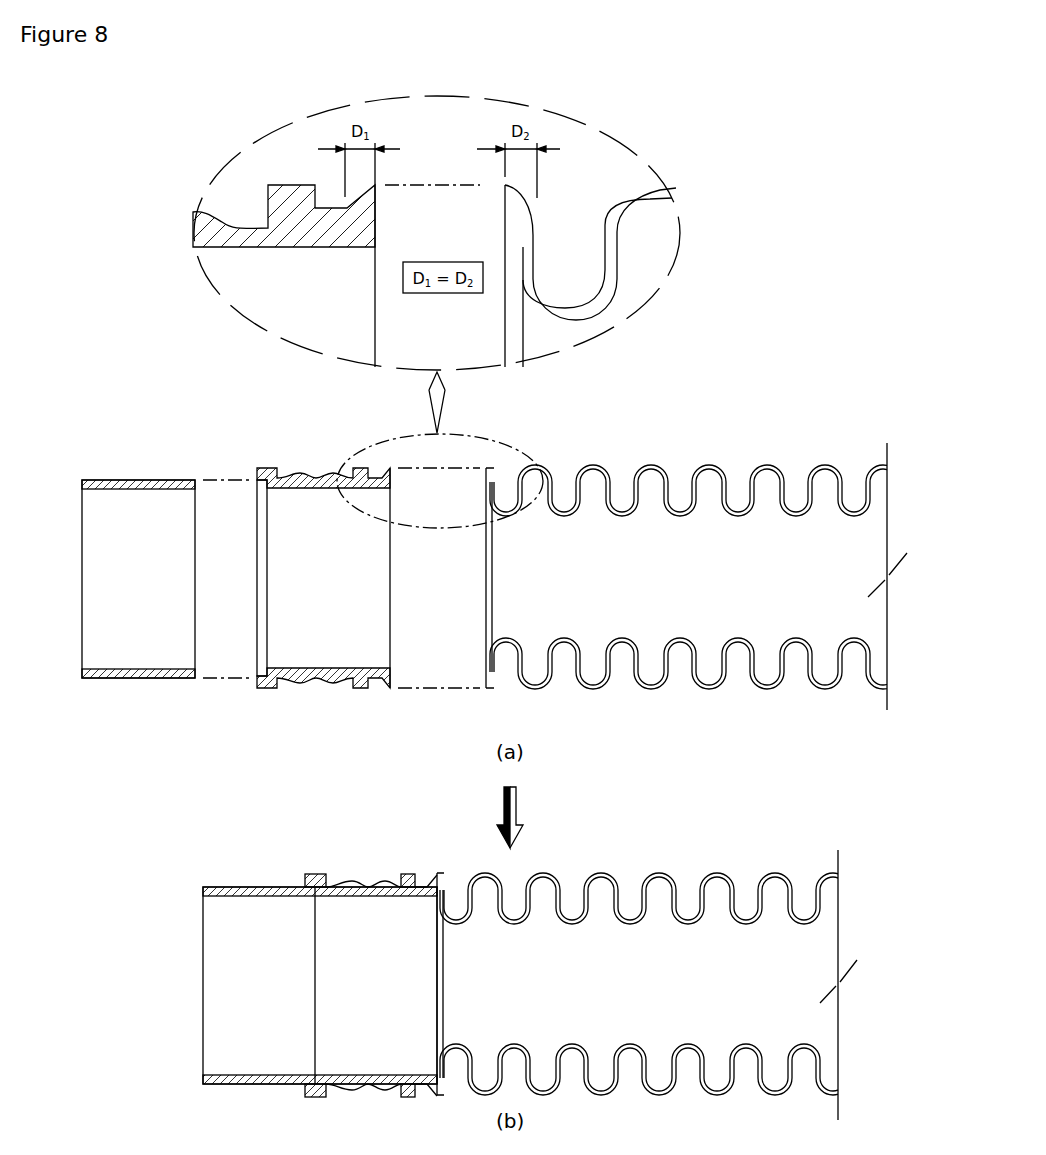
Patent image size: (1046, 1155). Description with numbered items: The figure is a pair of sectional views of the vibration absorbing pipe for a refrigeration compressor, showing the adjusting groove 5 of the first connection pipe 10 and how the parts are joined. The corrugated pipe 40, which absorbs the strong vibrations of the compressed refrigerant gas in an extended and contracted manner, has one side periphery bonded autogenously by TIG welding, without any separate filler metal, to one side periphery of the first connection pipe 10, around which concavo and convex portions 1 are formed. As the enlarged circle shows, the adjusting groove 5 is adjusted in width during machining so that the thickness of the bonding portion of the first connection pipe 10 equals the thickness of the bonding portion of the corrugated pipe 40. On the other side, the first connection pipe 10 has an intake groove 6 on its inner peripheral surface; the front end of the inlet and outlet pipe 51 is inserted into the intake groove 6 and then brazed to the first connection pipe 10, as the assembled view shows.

In FIG. 8a, the concavo and convex portions 1 is at (319, 477).
In FIG. 8a, the adjusting groove 5 is at (336, 197).
In FIG. 8a, the intake groove 6 is at (257, 543).
In FIG. 8a, the first connection pipe 10 is at (305, 543).
In FIG. 8b, the first connection pipe 10 is at (316, 874).
In FIG. 8a, the corrugated pipe 40 is at (623, 512).
In FIG. 8b, the corrugated pipe 40 is at (574, 920).
In FIG. 8a, the inlet and outlet pipe 51 is at (150, 480).
In FIG. 8b, the inlet and outlet pipe 51 is at (268, 887).